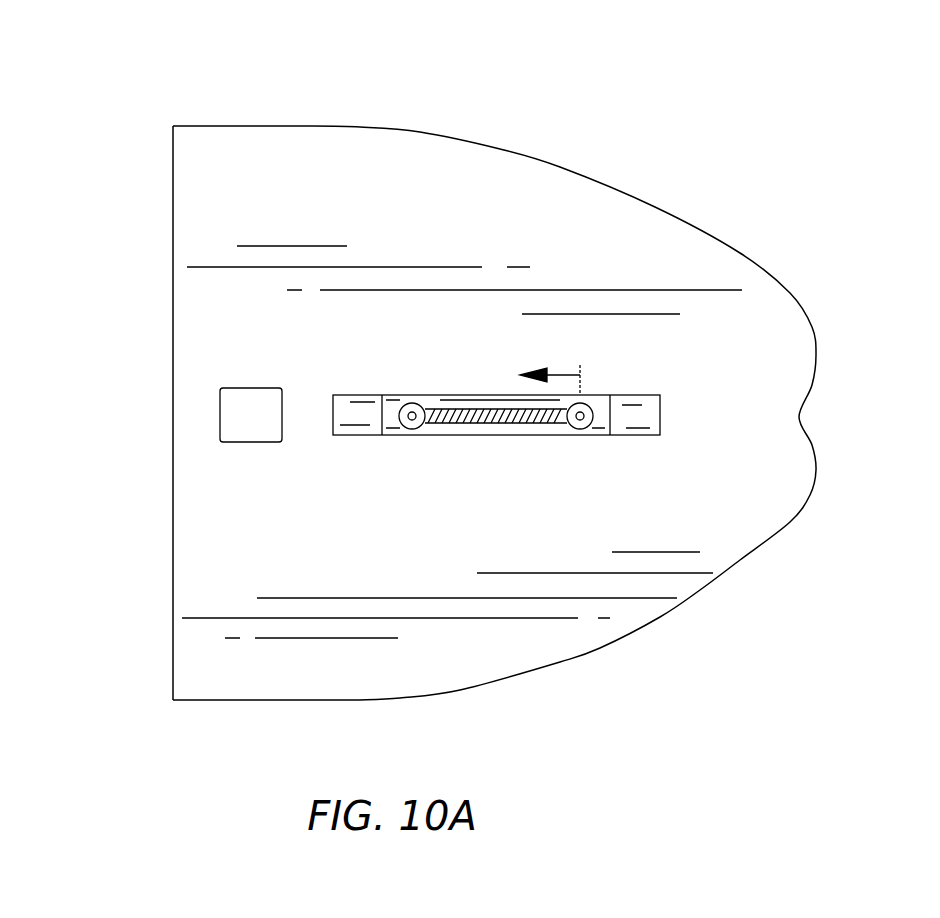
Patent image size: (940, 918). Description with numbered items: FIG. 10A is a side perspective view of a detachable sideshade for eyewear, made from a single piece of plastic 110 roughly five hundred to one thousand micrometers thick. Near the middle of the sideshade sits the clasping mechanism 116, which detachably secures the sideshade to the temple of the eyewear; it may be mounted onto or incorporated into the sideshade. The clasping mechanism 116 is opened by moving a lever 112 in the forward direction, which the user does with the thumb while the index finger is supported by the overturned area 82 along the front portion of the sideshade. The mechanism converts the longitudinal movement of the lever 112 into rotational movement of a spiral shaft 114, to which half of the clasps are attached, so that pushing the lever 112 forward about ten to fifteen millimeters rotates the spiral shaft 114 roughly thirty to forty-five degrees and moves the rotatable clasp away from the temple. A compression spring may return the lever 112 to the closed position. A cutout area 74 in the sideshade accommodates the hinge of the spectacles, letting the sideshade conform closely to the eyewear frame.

The single piece of plastic 110 is at (500, 182).
The overturned area 82 is at (172, 513).
The cutout area 74 is at (232, 410).
The clasping mechanism 116 is at (640, 395).
The spiral shaft 114 is at (468, 410).
The lever 112 is at (583, 423).